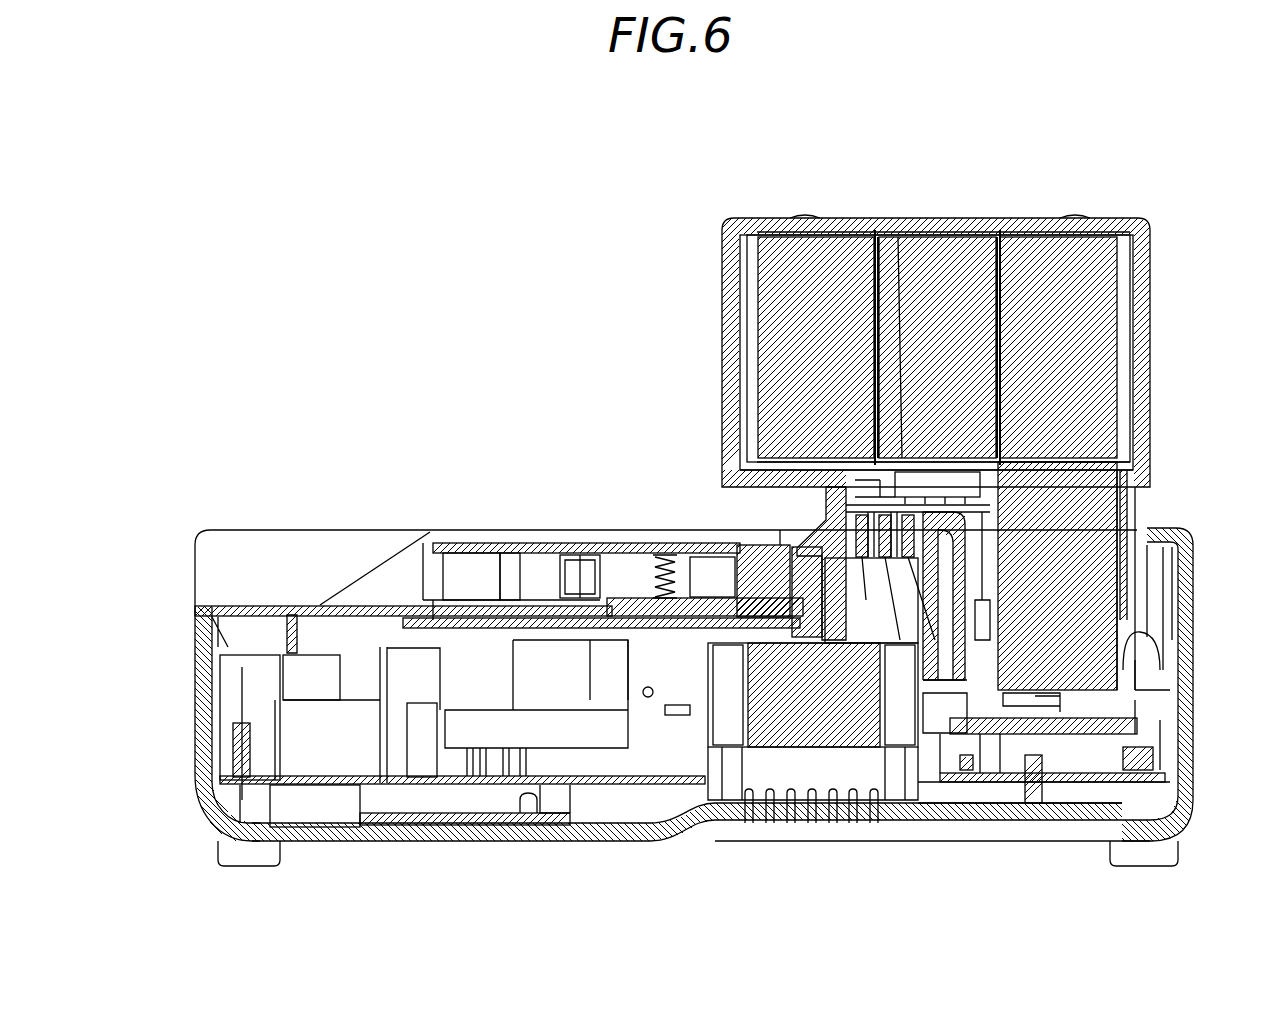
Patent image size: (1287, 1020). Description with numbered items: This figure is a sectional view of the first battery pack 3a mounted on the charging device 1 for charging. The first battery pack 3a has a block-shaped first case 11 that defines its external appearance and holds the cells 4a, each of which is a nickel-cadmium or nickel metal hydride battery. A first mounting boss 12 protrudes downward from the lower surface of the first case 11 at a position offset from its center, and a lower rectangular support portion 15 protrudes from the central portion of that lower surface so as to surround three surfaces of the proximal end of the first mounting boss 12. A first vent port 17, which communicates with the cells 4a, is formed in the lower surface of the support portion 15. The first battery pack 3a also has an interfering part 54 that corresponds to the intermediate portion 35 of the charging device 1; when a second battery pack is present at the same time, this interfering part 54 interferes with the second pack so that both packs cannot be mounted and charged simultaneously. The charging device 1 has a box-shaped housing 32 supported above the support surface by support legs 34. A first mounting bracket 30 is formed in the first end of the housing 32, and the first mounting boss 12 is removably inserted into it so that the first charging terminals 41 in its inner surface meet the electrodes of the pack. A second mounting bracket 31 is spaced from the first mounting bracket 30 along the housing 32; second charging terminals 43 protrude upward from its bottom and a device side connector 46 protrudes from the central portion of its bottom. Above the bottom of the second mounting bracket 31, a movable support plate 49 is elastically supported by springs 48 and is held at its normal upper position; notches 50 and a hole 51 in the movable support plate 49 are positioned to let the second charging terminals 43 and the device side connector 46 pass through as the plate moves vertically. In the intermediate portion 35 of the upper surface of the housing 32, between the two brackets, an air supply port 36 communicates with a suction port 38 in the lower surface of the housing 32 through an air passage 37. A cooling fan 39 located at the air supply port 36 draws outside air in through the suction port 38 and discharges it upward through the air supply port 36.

The charging device 1 is at (1204, 519).
The first battery pack 3a is at (1046, 196).
The cells 4a is at (958, 338).
The first case 11 is at (833, 222).
The interfering part 54 is at (897, 237).
The first mounting boss 12 is at (1127, 570).
The first mounting bracket 30 is at (1138, 593).
The first charging terminals 41 is at (1101, 680).
The first vent port 17 is at (845, 492).
The support portion 15 is at (812, 488).
The second mounting bracket 31 is at (523, 580).
The movable support plate 49 is at (545, 543).
The hole 51 is at (570, 545).
The device side connector 46 is at (597, 558).
The springs 48 is at (652, 542).
The second charging terminals 43 is at (700, 575).
The notches 50 is at (713, 548).
The housing 32 is at (195, 700).
The support legs 34 is at (220, 841).
The cooling fan 39 is at (777, 718).
The suction port 38 is at (813, 810).
The air passage 37 is at (853, 603).
The air supply port 36 is at (873, 540).
The intermediate portion 35 is at (884, 545).